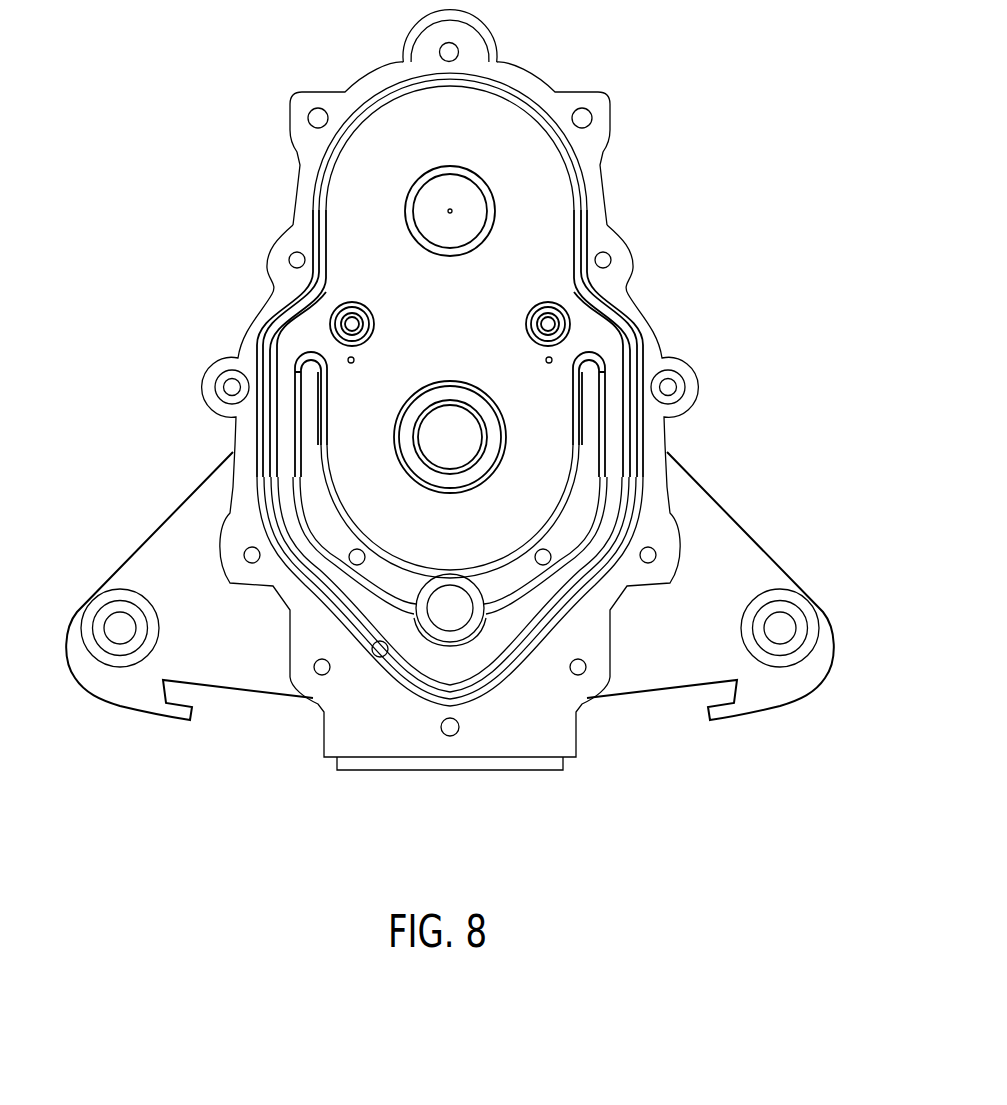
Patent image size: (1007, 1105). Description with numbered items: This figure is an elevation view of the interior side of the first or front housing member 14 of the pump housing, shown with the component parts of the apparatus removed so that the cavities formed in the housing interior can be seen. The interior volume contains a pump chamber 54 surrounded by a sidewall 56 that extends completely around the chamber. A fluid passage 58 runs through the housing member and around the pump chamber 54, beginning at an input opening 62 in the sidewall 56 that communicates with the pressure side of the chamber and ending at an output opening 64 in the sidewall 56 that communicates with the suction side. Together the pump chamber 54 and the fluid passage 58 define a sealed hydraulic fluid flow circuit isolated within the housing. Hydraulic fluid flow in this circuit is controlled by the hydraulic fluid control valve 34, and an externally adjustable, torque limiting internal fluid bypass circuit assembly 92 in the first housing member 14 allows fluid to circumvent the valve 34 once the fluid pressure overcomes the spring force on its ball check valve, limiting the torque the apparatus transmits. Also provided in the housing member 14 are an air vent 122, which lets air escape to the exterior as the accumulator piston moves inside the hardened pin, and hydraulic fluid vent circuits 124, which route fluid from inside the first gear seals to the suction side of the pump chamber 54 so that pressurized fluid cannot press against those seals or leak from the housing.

The first housing member 14 is at (606, 183).
The hydraulic fluid control valve 34 is at (458, 632).
The pump chamber 54 is at (478, 105).
The sidewall 56 is at (383, 105).
The fluid passage 58 is at (288, 430).
The input opening 62 is at (320, 318).
The output opening 64 is at (582, 314).
The internal fluid bypass circuit assembly 92 is at (398, 688).
The air vent 122 is at (462, 200).
The hydraulic fluid vent circuits 124 is at (343, 354).